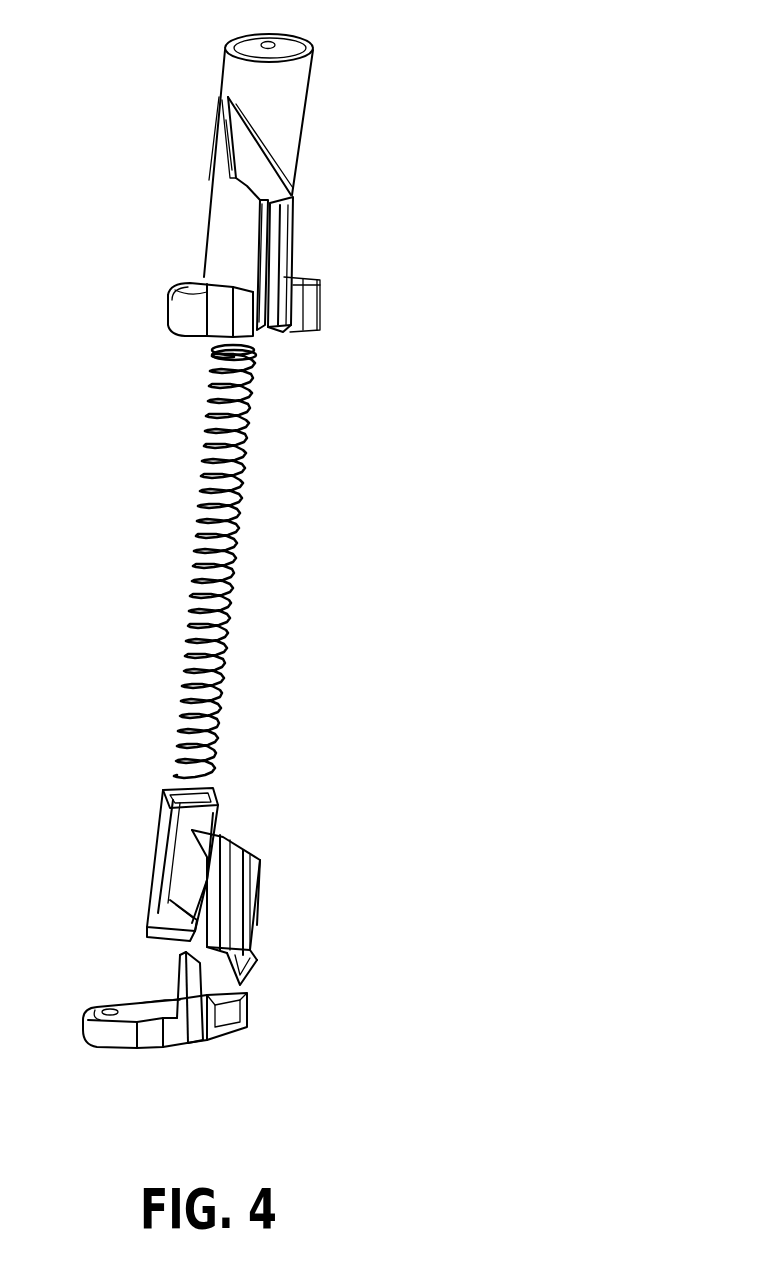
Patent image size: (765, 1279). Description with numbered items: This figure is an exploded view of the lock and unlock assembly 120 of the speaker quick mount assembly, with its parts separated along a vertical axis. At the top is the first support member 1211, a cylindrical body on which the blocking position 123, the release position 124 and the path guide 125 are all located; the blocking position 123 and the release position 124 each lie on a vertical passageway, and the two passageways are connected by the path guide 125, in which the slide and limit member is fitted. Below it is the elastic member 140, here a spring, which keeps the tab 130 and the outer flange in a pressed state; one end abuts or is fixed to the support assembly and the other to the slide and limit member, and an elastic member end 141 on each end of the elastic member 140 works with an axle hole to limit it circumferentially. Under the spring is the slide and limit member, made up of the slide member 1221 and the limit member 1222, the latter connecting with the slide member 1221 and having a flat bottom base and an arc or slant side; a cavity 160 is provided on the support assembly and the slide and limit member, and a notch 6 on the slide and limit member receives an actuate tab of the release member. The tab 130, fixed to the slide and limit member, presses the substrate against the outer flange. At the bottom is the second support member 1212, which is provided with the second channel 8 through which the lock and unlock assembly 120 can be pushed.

The lock and unlock assembly 120 is at (347, 86).
The first support member 1211 is at (267, 107).
The blocking position 123 is at (247, 172).
The path guide 125 is at (267, 183).
The release position 124 is at (268, 252).
The elastic member end 141 is at (220, 362).
The elastic member 140 is at (240, 477).
The cavity 160 is at (187, 800).
The slide member 1221 is at (217, 823).
The limit member 1222 is at (203, 853).
The notch 6 is at (190, 920).
The tab 130 is at (250, 913).
The second channel 8 is at (152, 996).
The second support member 1212 is at (200, 1043).